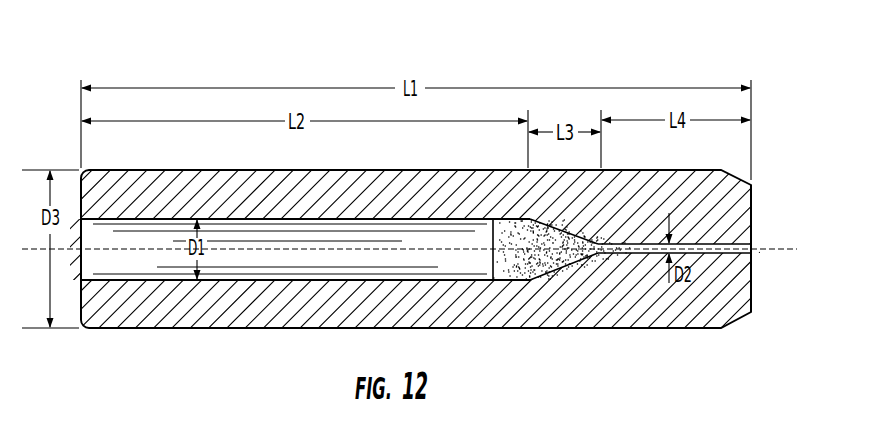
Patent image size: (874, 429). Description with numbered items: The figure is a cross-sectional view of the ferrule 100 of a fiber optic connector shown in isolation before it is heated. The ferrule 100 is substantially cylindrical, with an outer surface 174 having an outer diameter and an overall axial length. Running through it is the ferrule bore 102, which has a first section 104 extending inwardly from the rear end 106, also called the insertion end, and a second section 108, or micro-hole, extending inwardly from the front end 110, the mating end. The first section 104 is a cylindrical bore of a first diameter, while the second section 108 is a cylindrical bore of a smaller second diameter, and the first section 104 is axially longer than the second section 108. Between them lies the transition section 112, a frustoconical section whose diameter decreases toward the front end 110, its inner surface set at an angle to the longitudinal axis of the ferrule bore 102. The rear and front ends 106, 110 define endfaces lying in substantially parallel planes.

The ferrule 100 is at (148, 169).
The ferrule bore 102 is at (80, 265).
The first section 104 is at (152, 282).
The rear end 106 is at (80, 197).
The second section 108 is at (716, 254).
The front end 110 is at (752, 208).
The transition section 112 is at (553, 270).
The outer surface 174 is at (440, 329).